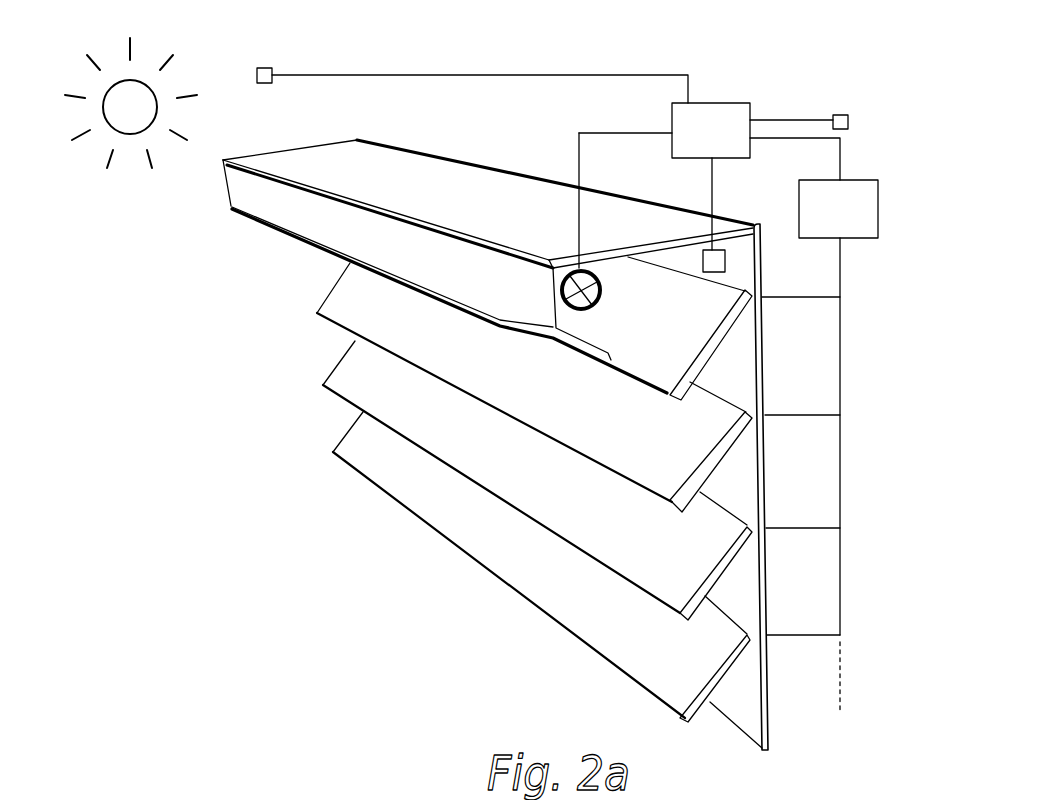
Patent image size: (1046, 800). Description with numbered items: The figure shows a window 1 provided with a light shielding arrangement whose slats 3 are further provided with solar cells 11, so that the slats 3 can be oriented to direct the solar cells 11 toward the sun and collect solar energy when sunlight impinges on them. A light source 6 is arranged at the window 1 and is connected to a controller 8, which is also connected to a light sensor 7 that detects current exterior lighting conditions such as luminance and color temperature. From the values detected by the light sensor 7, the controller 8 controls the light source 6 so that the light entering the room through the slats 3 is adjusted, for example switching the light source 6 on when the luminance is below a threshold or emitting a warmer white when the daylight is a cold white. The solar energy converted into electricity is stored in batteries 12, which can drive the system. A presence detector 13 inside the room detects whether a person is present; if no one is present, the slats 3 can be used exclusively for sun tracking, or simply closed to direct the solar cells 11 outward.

The window 1 is at (880, 273).
The slats 3 is at (474, 492).
The light source 6 is at (593, 293).
The light sensor 7 is at (264, 67).
The controller 8 is at (712, 102).
The solar cells 11 is at (355, 372).
The batteries 12 is at (879, 197).
The presence detector 13 is at (843, 114).